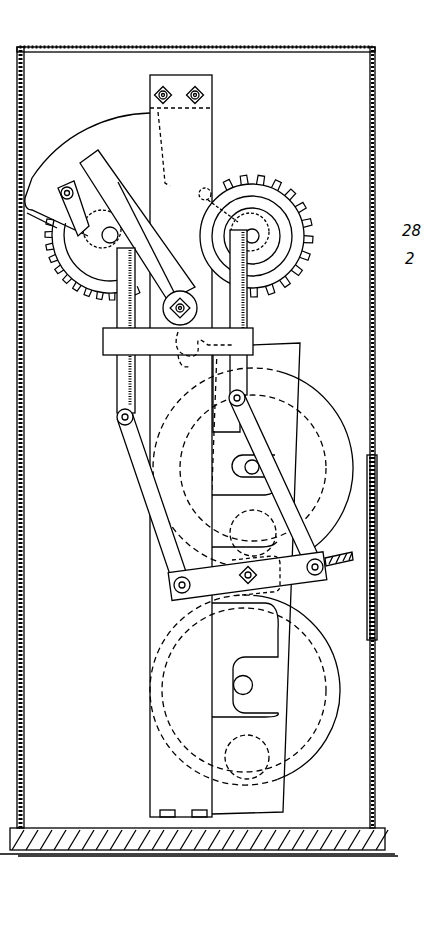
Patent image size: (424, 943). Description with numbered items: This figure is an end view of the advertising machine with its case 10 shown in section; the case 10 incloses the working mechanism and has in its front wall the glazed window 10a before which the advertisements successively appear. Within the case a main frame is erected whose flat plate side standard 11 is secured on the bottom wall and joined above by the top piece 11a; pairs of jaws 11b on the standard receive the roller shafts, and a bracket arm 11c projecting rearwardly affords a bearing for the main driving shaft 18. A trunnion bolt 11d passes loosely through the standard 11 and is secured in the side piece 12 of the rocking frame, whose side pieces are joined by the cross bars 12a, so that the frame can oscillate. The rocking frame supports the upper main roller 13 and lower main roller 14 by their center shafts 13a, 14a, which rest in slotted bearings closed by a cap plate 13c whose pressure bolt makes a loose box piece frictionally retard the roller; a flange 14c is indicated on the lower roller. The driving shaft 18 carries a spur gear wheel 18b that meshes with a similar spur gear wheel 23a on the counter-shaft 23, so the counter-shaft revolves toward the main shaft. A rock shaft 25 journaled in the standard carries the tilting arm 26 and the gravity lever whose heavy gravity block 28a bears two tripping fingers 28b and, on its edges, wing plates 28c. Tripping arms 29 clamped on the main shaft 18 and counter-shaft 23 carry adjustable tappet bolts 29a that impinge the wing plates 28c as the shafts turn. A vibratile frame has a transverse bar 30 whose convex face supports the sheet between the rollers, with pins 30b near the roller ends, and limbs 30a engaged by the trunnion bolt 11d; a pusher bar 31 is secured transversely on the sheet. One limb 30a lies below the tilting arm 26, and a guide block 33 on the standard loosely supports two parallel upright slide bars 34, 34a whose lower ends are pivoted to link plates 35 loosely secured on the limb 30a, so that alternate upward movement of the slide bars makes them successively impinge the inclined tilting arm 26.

The case 10 is at (216, 50).
The window 10a is at (378, 604).
The side standard 11 is at (212, 149).
The top piece 11a is at (212, 99).
The jaws 11b is at (236, 654).
The bracket arm 11c is at (277, 220).
The trunnion bolt 11d is at (232, 574).
The side piece 12 is at (302, 372).
The cross bar 12a is at (190, 370).
The upper main roller 13 is at (318, 412).
The center shaft 13a is at (245, 470).
The cap plate 13c is at (376, 520).
The lower main roller 14 is at (245, 690).
The center shaft 14a is at (252, 684).
The lower disc portion 14c is at (305, 762).
The main driving shaft 18 is at (110, 238).
The spur gear wheel 18b is at (68, 257).
The counter-shaft 23 is at (259, 236).
The spur gear wheel 23a is at (300, 270).
The rock shaft 25 is at (183, 289).
The tilting arm 26 is at (98, 166).
The gravity block 28a is at (92, 135).
The tripping fingers 28b is at (238, 73).
The wing plate 28c is at (165, 140).
The tripping arm 29 is at (70, 190).
The tappet bolt 29a is at (206, 201).
The transverse bar 30 is at (318, 590).
The limb 30a is at (175, 594).
The pin 30b is at (350, 555).
The pusher bar 31 is at (323, 560).
The guide block 33 is at (256, 336).
The slide bar 34 is at (250, 306).
The slide bar 34a is at (117, 396).
The link plate 35 is at (300, 480).